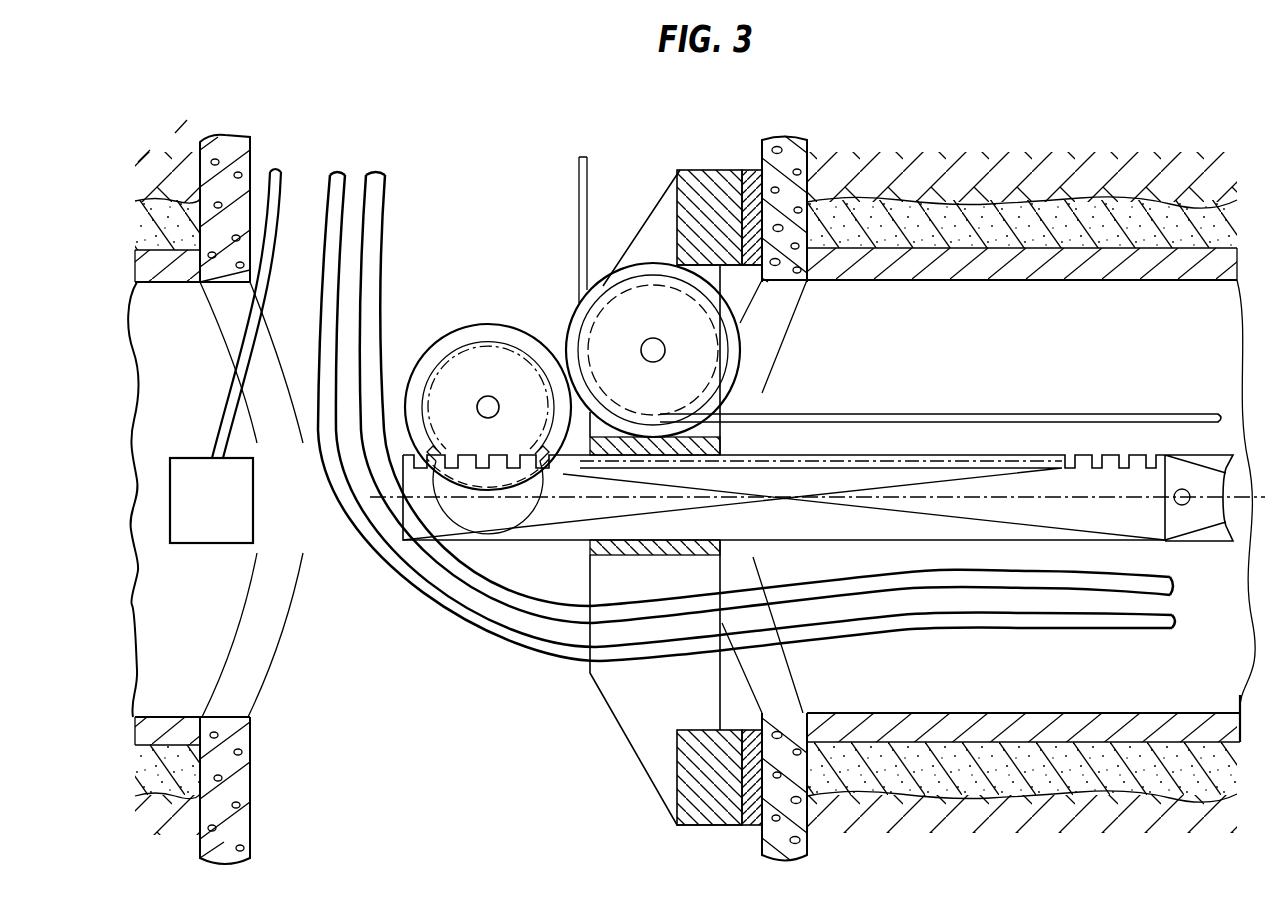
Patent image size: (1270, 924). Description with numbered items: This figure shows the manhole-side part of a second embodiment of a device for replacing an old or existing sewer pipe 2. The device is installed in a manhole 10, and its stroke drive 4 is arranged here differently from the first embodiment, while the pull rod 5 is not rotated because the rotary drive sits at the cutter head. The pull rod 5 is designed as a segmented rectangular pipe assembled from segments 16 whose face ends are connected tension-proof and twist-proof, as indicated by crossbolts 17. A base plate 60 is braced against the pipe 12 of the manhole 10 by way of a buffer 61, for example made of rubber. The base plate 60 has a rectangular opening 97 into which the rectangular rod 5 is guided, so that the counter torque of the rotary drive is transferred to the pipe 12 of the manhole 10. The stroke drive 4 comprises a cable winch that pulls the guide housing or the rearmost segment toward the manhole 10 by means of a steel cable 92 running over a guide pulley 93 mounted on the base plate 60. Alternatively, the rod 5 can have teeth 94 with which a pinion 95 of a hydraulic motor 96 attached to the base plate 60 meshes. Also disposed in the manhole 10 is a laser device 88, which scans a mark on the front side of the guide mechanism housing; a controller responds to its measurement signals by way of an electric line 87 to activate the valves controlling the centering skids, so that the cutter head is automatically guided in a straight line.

The sewer pipe 2 is at (1040, 265).
The stroke drive 4 is at (614, 190).
The pull rod 5 is at (1169, 548).
The manhole 10 is at (520, 234).
The pipe of the manhole 12 is at (782, 150).
The segment 16 is at (1138, 485).
The crossbolt 17 is at (1185, 504).
The base plate 60 is at (704, 187).
The buffer 61 is at (749, 187).
The electric line 87 is at (455, 630).
The laser device 88 is at (195, 456).
The steel cable 92 is at (918, 413).
The guide pulley 93 is at (613, 282).
The teeth 94 is at (1080, 455).
The pinion 95 is at (468, 346).
The hydraulic motor 96 is at (500, 327).
The rectangular opening 97 is at (617, 540).